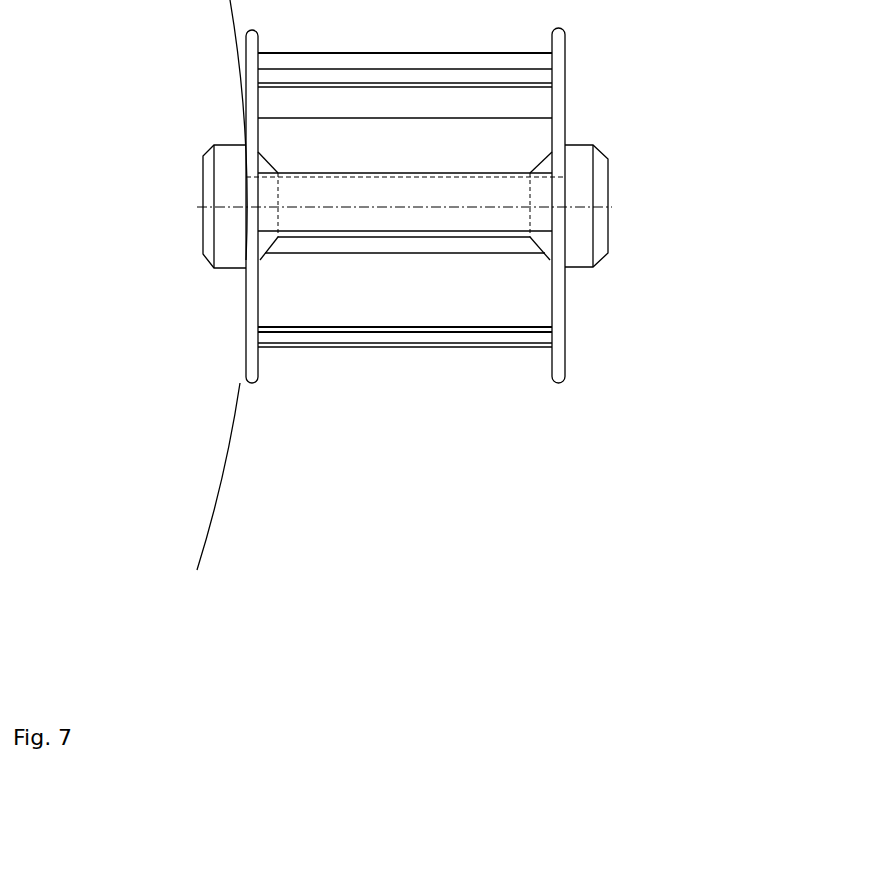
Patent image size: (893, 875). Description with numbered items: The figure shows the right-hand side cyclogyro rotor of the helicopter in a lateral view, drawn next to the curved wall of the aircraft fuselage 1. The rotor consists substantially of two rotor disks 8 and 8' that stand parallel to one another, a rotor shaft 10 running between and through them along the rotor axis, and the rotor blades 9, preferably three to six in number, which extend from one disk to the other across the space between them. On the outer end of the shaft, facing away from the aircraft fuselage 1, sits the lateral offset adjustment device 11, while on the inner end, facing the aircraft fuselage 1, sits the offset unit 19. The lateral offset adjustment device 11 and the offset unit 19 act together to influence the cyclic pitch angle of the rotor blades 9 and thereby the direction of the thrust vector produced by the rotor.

The aircraft fuselage 1 is at (220, 512).
The rotor disk 8 is at (639, 260).
The rotor disk 8' is at (337, 281).
The rotor blades 9 is at (402, 328).
The rotor shaft 10 is at (507, 213).
The lateral offset adjustment device 11 is at (590, 189).
The offset unit 19 is at (232, 212).